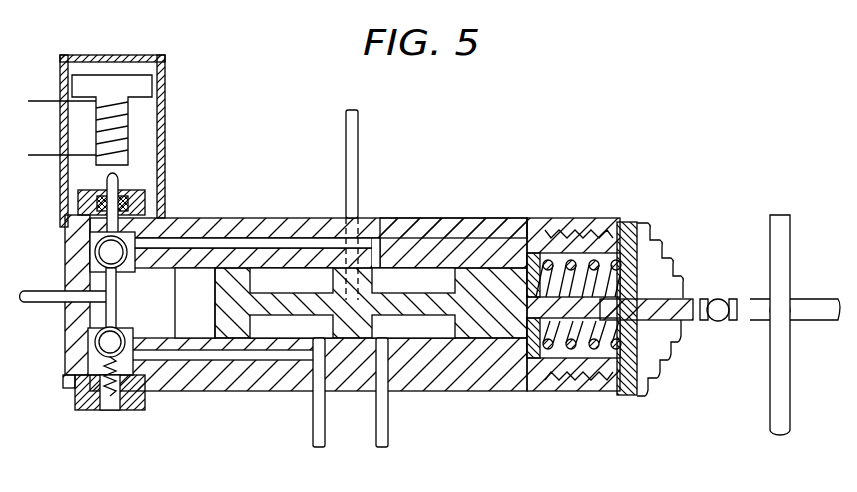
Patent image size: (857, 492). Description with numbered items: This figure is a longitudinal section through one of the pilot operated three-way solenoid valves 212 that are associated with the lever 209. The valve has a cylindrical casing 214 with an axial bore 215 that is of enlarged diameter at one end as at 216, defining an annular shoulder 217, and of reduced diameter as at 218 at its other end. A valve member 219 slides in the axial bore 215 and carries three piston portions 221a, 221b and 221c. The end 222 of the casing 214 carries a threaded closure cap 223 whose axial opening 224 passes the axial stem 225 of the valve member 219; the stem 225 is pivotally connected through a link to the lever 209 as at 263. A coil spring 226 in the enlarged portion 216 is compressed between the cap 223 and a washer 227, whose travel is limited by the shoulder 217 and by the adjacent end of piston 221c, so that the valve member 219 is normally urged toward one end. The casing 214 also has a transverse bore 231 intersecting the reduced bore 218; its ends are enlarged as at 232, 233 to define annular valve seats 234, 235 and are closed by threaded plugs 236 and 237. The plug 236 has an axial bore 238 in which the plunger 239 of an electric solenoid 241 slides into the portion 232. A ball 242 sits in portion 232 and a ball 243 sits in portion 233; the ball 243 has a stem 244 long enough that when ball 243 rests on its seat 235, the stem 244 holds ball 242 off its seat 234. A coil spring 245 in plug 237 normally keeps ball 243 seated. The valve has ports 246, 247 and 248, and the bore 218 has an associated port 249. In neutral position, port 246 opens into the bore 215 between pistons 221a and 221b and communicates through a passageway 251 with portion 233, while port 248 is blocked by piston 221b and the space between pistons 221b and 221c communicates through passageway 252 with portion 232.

The lever 209 is at (771, 397).
The pilot operated three-way solenoid valve 212 is at (460, 199).
The cylindrical casing 214 is at (401, 228).
The axial bore 215 is at (442, 345).
The enlarged diameter portion of bore 216 is at (556, 348).
The annular shoulder 217 is at (514, 355).
The reduced diameter portion of bore 218 is at (156, 303).
The valve member 219 is at (479, 290).
The piston portion 221a is at (233, 323).
The piston portion 221b is at (338, 305).
The piston portion 221c is at (513, 288).
The end of casing 222 is at (573, 395).
The closure cap 223 is at (580, 398).
The axial opening 224 is at (652, 257).
The axial stem 225 is at (651, 313).
The coil spring 226 is at (634, 334).
The washer 227 is at (496, 340).
The transverse bore 231 is at (66, 296).
The enlarged diameter portion of transverse bore 232 is at (131, 234).
The enlarged diameter portion of transverse bore 233 is at (96, 355).
The annular valve seat 234 is at (142, 228).
The annular valve seat 235 is at (100, 330).
The threaded plug 236 is at (140, 192).
The threaded plug 237 is at (91, 412).
The axial bore of plug 238 is at (78, 202).
The plunger 239 is at (114, 192).
The electric solenoid 241 is at (133, 93).
The ball 242 is at (104, 252).
The ball 243 is at (103, 342).
The stem 244 is at (195, 303).
The coil spring 245 is at (112, 400).
The port 246 is at (316, 392).
The port 247 is at (392, 395).
The port 248 is at (358, 217).
The port 249 is at (73, 292).
The passageway 251 is at (278, 362).
The passageway 252 is at (296, 212).
The pivotal connection 263 is at (783, 309).